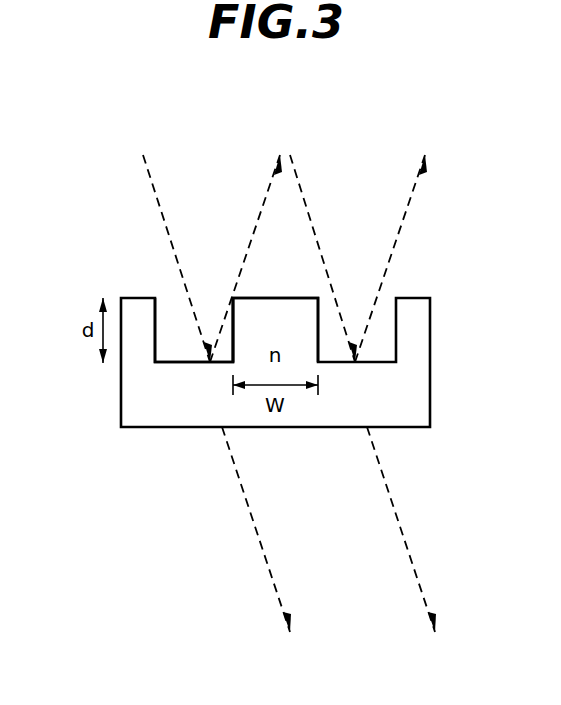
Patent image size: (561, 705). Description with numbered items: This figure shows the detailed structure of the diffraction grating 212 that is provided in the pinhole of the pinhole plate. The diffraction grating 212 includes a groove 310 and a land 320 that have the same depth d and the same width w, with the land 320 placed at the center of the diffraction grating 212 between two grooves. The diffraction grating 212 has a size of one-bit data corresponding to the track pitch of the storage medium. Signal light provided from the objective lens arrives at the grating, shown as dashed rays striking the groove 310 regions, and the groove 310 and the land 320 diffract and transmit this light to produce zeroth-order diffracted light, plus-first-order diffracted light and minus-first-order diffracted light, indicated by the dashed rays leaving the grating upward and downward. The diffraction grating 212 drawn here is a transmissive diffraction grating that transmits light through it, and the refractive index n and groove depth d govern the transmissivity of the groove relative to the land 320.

The diffraction grating 212 is at (327, 125).
The groove 310 is at (175, 313).
The land 320 is at (277, 297).